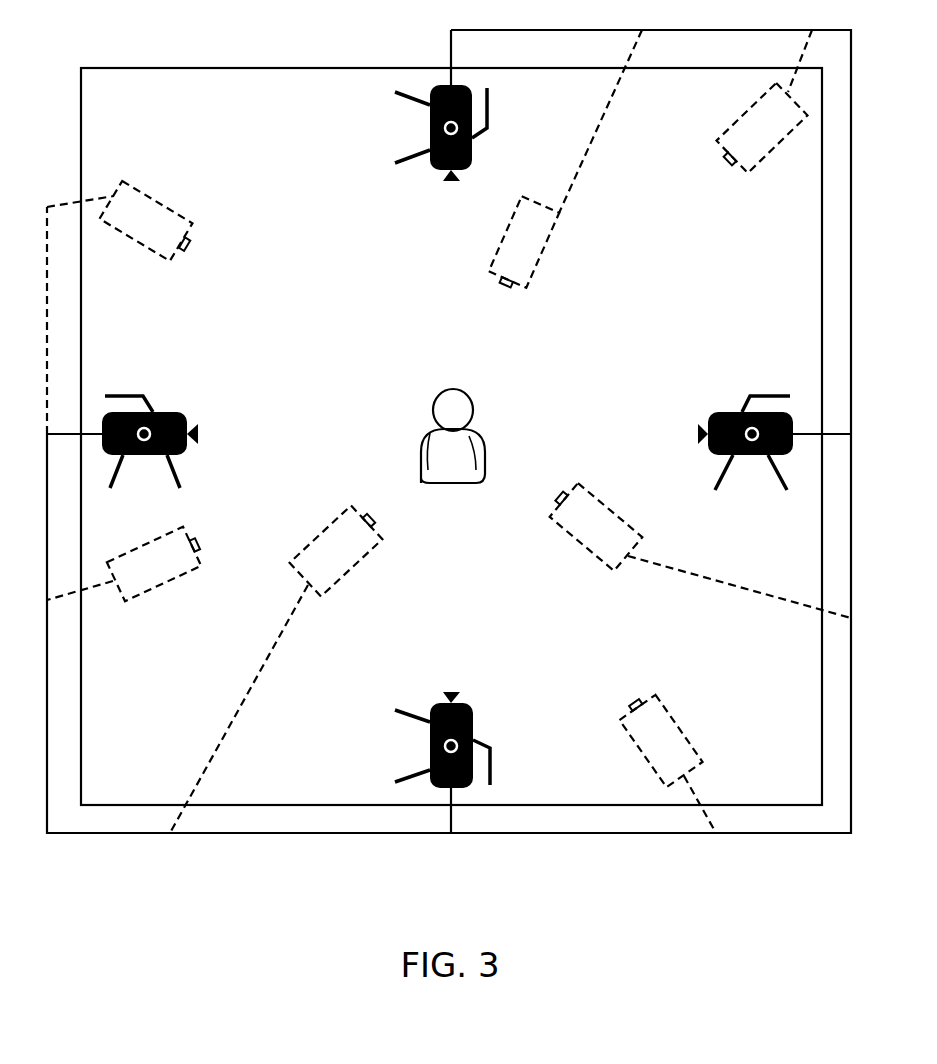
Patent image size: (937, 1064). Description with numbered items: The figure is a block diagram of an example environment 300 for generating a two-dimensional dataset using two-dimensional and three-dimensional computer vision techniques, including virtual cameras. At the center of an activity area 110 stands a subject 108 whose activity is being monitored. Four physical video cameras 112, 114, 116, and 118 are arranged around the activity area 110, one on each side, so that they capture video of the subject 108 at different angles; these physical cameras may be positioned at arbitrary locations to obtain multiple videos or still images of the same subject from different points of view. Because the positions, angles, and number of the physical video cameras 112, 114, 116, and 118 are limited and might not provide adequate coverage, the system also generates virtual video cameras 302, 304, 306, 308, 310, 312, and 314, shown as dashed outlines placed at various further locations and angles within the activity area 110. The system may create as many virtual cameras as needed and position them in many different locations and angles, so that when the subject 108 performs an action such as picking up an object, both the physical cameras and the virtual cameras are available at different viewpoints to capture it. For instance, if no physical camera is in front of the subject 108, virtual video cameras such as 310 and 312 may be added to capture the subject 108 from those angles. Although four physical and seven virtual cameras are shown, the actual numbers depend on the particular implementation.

The environment 300 is at (472, 902).
The activity area 110 is at (451, 436).
The subject 108 is at (478, 430).
The physical video camera 112 is at (472, 150).
The physical video camera 114 is at (728, 412).
The physical video camera 116 is at (474, 720).
The physical video camera 118 is at (172, 412).
The virtual video camera 302 is at (557, 228).
The virtual video camera 304 is at (717, 141).
The virtual video camera 306 is at (583, 547).
The virtual video camera 308 is at (682, 725).
The virtual video camera 310 is at (330, 586).
The virtual video camera 312 is at (167, 585).
The virtual video camera 314 is at (163, 260).